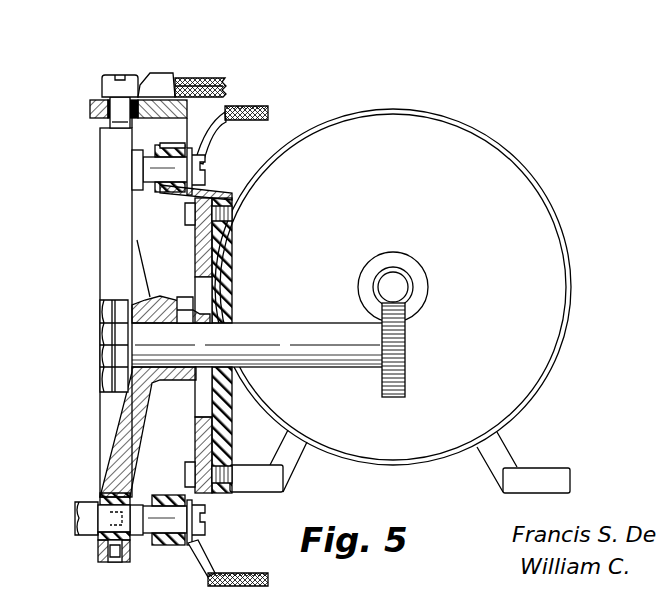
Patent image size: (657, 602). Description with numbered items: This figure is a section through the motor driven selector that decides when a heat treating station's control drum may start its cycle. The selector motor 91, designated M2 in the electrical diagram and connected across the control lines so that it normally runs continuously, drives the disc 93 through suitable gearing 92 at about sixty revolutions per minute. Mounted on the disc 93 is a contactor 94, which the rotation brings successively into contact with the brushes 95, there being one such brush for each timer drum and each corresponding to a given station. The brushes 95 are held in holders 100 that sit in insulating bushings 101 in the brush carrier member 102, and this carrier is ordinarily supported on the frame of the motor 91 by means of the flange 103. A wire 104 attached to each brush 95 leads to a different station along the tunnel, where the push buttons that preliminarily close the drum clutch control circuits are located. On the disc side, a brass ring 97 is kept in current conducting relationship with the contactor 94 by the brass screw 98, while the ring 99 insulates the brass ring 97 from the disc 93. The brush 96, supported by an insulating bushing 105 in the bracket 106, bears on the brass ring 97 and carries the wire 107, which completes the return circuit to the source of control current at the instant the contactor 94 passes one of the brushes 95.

The selector motor 91 is at (565, 233).
The selector motor M2 is at (544, 186).
The gearing 92 is at (412, 296).
The disc 93 is at (136, 430).
The contactor 94 is at (73, 519).
The brushes 95 is at (140, 160).
The brush 96 is at (100, 122).
The brass ring 97 is at (97, 556).
The brass screw 98 is at (115, 563).
The ring 99 is at (96, 542).
The holders 100 is at (206, 165).
The insulating bushings 101 is at (165, 190).
The brush carrier member 102 is at (194, 245).
The flange 103 is at (234, 270).
The wire 104 is at (262, 113).
The insulating bushing 105 is at (88, 110).
The bracket 106 is at (190, 112).
The wire 107 is at (207, 67).